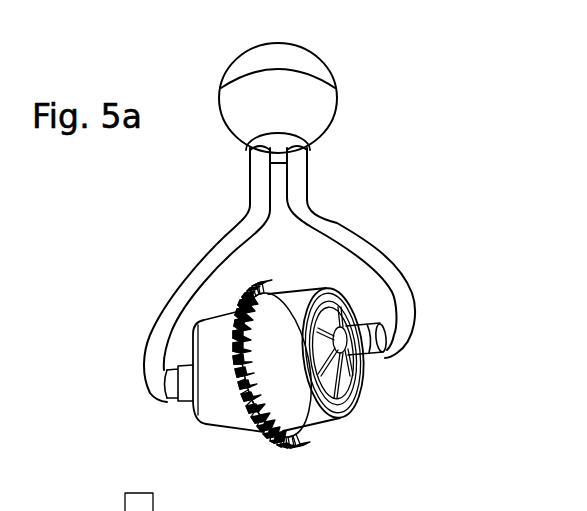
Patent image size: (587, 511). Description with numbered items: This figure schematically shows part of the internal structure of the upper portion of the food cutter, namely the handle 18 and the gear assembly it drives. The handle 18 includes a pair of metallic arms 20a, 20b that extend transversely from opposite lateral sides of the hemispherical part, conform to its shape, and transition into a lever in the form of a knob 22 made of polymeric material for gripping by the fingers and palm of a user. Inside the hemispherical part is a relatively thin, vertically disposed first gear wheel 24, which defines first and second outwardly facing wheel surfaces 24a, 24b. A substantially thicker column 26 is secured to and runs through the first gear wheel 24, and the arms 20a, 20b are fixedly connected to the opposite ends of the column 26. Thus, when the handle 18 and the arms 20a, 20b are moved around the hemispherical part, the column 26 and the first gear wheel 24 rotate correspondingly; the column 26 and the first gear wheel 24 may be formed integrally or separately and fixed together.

The handle 18 is at (288, 203).
The knob 22 is at (283, 62).
The arm 20a is at (205, 263).
The arm 20b is at (342, 228).
The column 26 is at (221, 403).
The first gear wheel 24 is at (263, 392).
The first outwardly facing wheel surface 24a is at (325, 444).
The second outwardly facing wheel surface 24b is at (250, 453).